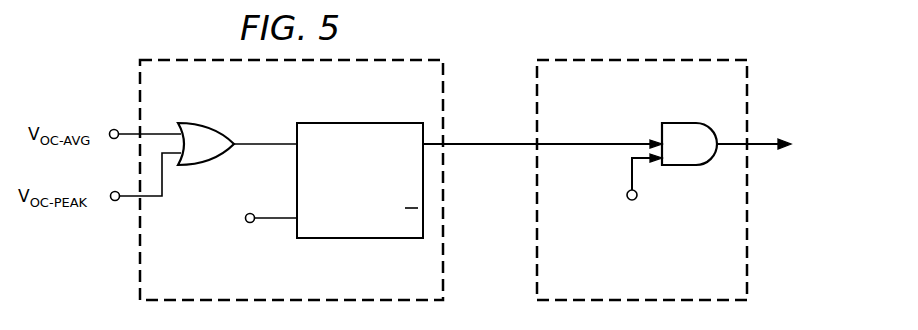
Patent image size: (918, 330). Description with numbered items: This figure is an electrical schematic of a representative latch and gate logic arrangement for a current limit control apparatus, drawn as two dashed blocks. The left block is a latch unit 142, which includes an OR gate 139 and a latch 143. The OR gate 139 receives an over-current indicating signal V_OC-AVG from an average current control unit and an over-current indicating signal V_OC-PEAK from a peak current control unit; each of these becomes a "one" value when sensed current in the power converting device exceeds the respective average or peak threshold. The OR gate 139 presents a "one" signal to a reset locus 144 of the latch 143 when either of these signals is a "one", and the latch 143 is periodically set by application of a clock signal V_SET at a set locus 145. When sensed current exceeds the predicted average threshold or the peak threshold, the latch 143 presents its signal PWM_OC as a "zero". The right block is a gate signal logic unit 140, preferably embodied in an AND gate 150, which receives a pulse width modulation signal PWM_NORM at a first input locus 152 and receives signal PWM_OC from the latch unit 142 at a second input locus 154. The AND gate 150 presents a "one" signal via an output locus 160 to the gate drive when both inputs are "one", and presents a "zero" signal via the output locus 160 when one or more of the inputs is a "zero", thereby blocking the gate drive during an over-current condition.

The OR gate 139 is at (218, 123).
The latch unit 142 is at (130, 246).
The latch 143 is at (358, 122).
The reset locus 144 is at (275, 147).
The set locus 145 is at (270, 222).
The gate signal logic unit 140 is at (757, 246).
The AND gate 150 is at (683, 122).
The first input locus 152 is at (630, 176).
The second input locus 154 is at (620, 142).
The output locus 160 is at (760, 142).